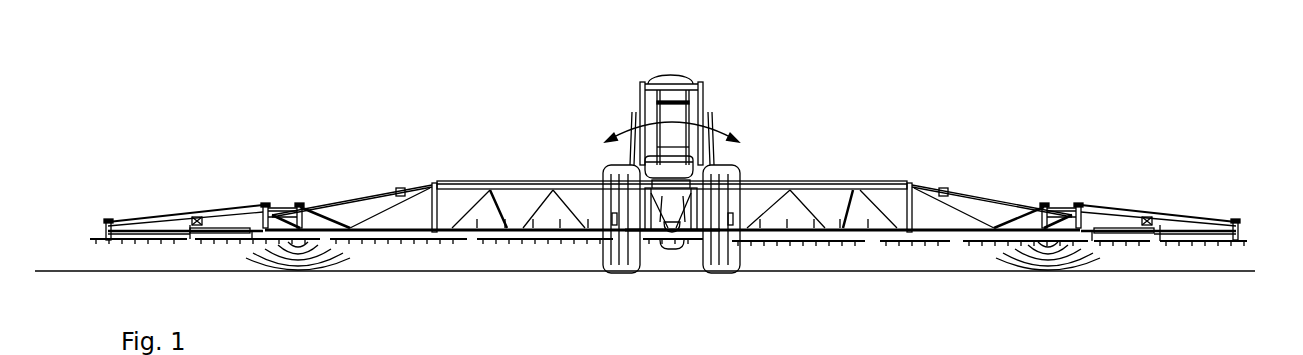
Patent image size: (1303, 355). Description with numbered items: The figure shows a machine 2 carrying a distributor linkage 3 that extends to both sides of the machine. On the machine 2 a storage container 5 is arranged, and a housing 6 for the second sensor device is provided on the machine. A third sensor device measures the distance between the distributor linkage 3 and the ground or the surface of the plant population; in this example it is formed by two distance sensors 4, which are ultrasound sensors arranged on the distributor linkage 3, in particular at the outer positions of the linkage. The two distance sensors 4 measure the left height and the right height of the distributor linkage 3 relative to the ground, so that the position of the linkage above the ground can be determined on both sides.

The machine 2 is at (728, 104).
The distributor linkage 3 is at (468, 181).
The distance sensors 4 is at (318, 258).
The storage container 5 is at (670, 78).
The housing for the second sensor device 6 is at (692, 169).